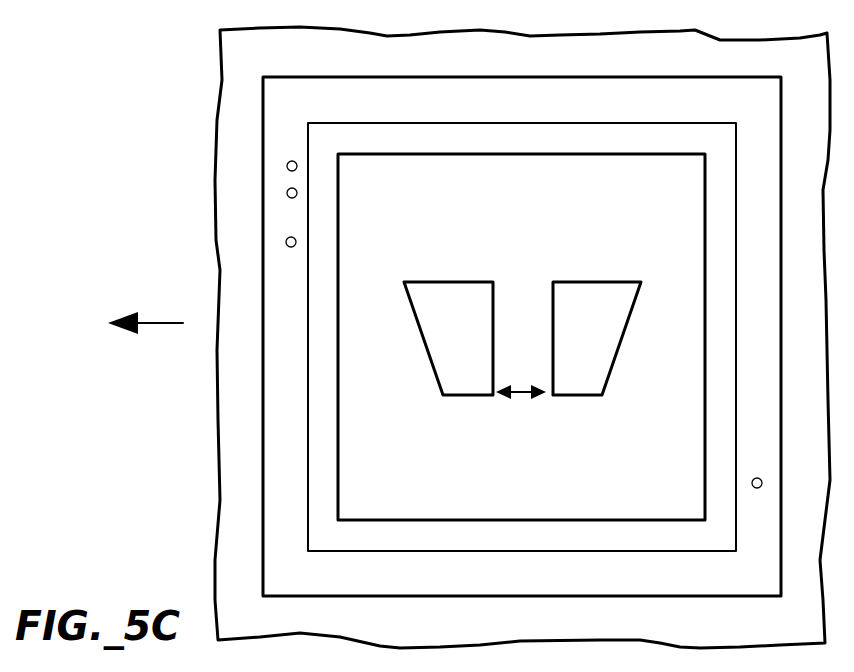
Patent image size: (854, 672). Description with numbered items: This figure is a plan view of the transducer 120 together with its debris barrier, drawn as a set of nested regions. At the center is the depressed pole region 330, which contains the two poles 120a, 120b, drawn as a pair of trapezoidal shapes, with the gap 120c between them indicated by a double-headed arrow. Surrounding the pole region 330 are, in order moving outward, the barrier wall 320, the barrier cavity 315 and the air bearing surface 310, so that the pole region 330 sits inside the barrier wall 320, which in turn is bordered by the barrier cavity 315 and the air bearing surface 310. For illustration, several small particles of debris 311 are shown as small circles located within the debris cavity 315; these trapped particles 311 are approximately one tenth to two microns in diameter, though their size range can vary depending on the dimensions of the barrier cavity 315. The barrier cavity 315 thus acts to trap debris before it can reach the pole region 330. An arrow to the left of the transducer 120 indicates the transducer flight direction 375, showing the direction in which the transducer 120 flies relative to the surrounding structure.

The transducer 120 is at (186, 57).
The air bearing surface 310 is at (243, 119).
The particles of debris 311 is at (286, 166).
The barrier cavity 315 is at (283, 507).
The barrier wall 320 is at (318, 462).
The depressed pole region 330 is at (375, 432).
The transducer flight direction 375 is at (178, 323).
The pole 120a is at (445, 292).
The pole 120b is at (592, 292).
The gap 120c is at (518, 398).